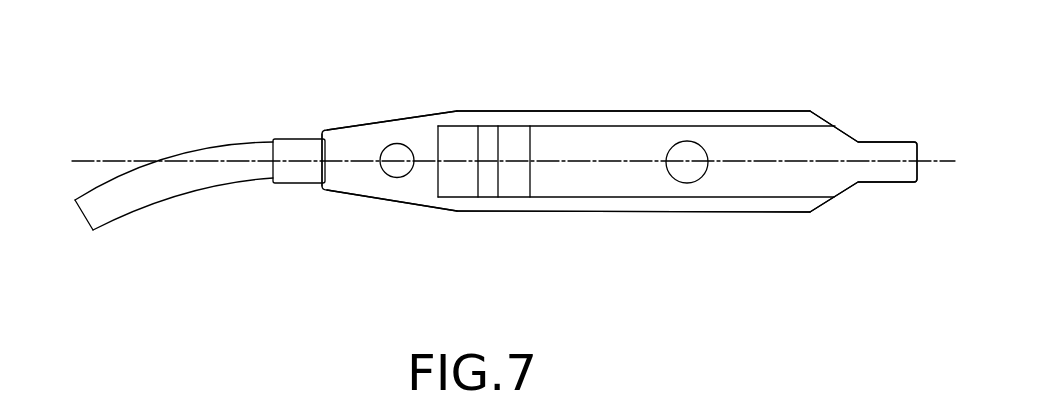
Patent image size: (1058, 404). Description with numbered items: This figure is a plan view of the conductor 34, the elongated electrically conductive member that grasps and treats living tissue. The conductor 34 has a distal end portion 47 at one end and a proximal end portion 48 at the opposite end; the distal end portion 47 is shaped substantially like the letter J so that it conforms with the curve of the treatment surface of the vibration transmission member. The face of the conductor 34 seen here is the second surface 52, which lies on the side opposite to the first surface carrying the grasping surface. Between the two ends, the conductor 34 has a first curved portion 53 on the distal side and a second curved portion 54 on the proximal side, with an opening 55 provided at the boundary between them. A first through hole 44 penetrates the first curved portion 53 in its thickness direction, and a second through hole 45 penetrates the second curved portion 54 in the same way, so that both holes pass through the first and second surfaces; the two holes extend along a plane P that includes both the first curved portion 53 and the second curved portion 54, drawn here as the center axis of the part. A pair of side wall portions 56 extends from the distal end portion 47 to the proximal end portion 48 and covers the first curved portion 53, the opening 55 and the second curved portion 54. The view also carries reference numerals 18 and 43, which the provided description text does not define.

The treatment tool 18 is at (571, 86).
The conductor 34 is at (603, 108).
The bending tip tube 43 is at (120, 205).
The first through hole 44 is at (397, 143).
The second through hole 45 is at (686, 141).
The distal end portion 47 is at (80, 212).
The proximal end portion 48 is at (921, 184).
The second surface 52 is at (345, 140).
The first curved portion 53 is at (423, 177).
The second curved portion 54 is at (655, 189).
The opening 55 is at (506, 144).
The side wall portions 56 is at (646, 115).
The plane P is at (932, 160).